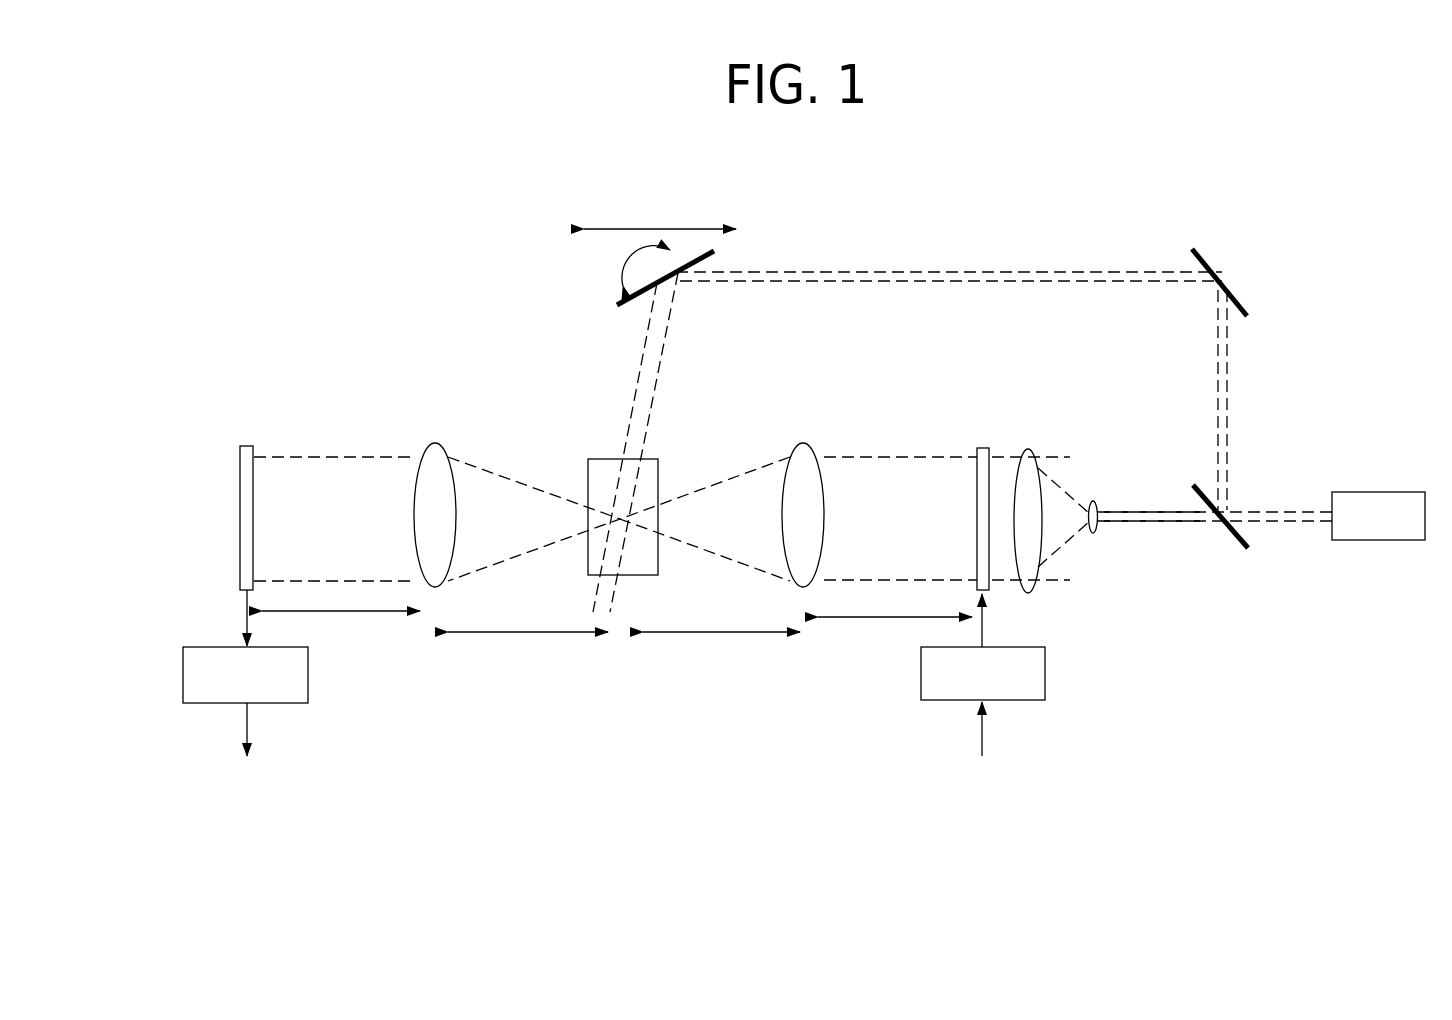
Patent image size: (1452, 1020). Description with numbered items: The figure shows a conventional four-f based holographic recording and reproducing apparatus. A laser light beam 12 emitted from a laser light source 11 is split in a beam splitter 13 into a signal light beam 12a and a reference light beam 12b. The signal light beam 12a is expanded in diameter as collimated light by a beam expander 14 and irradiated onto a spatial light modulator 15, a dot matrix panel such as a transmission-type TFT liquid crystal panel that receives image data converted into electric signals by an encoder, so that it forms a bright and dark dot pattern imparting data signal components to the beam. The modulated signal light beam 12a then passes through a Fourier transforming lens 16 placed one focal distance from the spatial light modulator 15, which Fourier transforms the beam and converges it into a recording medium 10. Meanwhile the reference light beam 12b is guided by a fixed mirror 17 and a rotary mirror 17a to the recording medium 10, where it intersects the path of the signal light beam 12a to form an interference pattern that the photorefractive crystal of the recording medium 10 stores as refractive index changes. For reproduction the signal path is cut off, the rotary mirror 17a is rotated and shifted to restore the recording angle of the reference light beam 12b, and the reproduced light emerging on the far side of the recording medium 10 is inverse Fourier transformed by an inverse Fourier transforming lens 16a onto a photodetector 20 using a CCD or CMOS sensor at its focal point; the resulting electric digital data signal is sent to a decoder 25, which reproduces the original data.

The recording medium 10 is at (626, 462).
The laser light source 11 is at (1396, 492).
The laser light beam 12 is at (1278, 510).
The signal light beam 12a is at (1149, 510).
The reference light beam 12b is at (925, 270).
The beam splitter 13 is at (1230, 535).
The beam expander 14 is at (1053, 502).
The spatial light modulator 15 is at (982, 446).
The Fourier transforming lens 16 is at (803, 444).
The inverse Fourier transforming lens 16a is at (434, 443).
The fixed mirror 17 is at (1218, 272).
The rotary mirror 17a is at (612, 305).
The photodetector 20 is at (246, 446).
The decoder 25 is at (1046, 656).